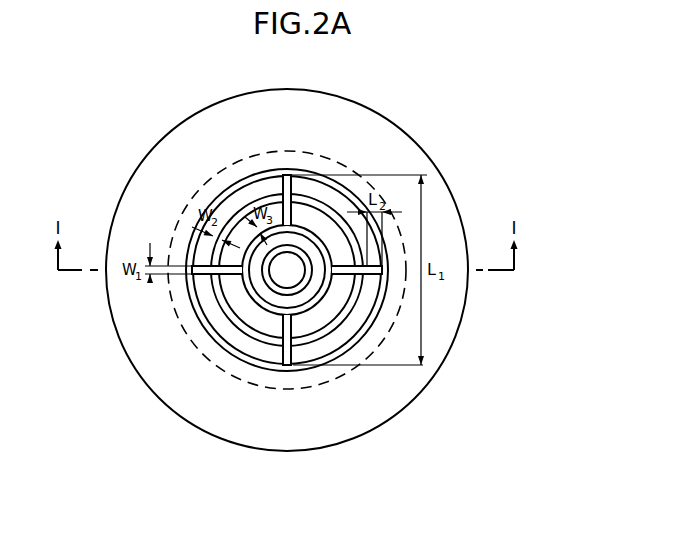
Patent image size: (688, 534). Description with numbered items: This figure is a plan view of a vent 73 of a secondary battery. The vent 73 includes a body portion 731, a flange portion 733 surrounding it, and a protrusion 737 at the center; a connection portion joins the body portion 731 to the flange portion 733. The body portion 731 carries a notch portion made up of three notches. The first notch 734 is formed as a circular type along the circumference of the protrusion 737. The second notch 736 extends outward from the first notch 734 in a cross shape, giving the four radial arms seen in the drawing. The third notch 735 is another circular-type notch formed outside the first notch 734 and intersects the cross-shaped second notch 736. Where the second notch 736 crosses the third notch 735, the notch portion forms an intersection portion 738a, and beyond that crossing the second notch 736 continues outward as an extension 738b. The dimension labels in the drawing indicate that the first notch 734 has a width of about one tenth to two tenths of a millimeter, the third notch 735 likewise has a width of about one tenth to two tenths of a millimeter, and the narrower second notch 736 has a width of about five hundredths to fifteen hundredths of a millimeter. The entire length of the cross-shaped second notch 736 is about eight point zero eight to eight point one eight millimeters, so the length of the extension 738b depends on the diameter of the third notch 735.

The vent 73 is at (460, 136).
The body portion 731 is at (330, 348).
The flange portion 733 is at (147, 177).
The first notch 734 is at (262, 336).
The third notch 735 is at (275, 322).
The second notch 736 is at (235, 295).
The protrusion 737 is at (312, 283).
The intersection portion 738a is at (293, 350).
The extension 738b is at (274, 362).